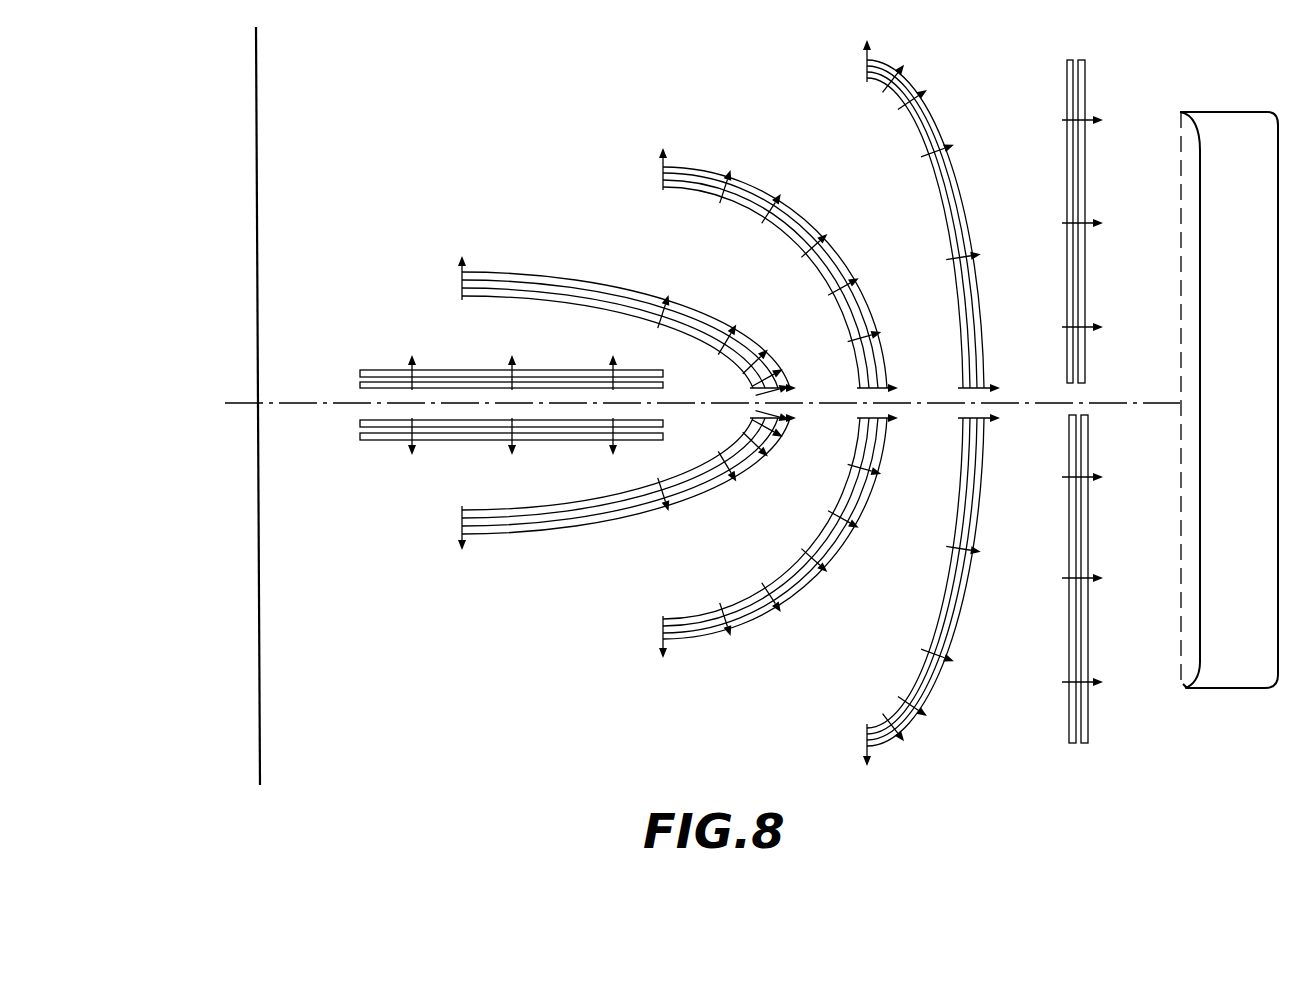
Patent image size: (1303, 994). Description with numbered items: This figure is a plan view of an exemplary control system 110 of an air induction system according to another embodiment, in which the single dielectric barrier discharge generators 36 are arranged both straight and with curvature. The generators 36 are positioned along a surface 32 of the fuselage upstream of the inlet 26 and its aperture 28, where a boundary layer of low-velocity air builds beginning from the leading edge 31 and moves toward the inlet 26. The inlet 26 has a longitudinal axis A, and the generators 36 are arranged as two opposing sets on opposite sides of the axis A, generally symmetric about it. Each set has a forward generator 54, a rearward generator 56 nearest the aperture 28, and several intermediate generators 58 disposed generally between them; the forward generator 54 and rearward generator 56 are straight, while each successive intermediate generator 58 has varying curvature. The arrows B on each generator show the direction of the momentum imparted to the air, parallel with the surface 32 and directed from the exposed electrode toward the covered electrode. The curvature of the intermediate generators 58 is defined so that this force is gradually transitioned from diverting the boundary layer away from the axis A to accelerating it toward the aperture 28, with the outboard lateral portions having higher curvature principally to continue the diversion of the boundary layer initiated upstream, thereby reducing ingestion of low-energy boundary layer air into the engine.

The inlet 26 is at (1243, 112).
The aperture 28 is at (1180, 290).
The leading edge 31 is at (256, 133).
The surface 32 is at (416, 212).
The single dielectric barrier discharge generators 36 is at (459, 368).
The forward generator 54 is at (374, 370).
The rearward generator 56 is at (1066, 80).
The intermediate generators 58 is at (547, 275).
The control system 110 is at (527, 163).
The longitudinal axis A is at (921, 403).
The arrow B is at (761, 402).